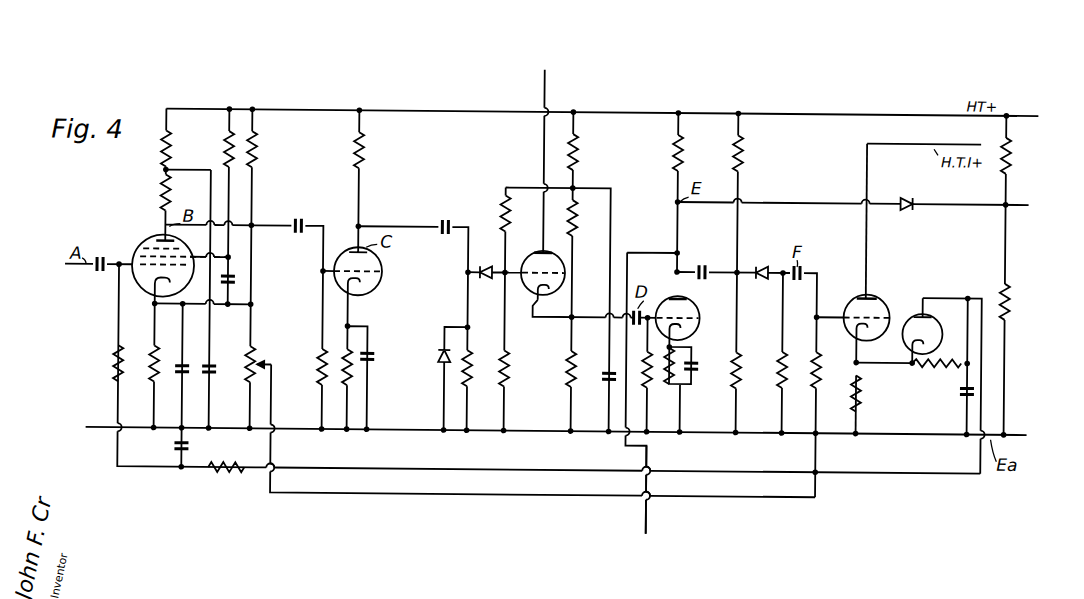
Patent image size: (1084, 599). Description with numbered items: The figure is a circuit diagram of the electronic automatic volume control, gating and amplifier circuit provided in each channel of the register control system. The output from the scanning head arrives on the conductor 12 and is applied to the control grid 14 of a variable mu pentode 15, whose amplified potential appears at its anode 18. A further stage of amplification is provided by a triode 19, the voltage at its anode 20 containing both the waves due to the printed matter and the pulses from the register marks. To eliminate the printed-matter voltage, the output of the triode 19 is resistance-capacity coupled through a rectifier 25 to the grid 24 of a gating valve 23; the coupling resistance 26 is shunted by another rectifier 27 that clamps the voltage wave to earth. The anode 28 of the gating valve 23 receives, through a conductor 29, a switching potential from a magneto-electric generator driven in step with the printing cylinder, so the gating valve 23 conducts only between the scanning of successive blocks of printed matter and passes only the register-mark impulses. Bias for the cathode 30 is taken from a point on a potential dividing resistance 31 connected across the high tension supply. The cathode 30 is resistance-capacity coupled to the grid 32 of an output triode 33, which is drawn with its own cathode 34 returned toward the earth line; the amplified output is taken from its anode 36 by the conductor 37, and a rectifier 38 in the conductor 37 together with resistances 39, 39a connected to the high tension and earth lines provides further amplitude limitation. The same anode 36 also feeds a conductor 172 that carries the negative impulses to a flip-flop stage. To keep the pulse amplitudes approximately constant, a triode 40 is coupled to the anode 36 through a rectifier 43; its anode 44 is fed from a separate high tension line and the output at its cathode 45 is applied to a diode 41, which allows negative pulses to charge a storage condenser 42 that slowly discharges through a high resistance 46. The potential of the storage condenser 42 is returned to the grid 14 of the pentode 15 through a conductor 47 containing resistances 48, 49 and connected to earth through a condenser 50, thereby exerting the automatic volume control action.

The conductor 12 is at (82, 270).
The control grid 14 is at (150, 286).
The variable mu pentode 15 is at (145, 246).
The anode 18 is at (180, 252).
The triode 19 is at (336, 285).
The anode 20 is at (380, 261).
The gating valve 23 is at (560, 256).
The grid 24 is at (556, 275).
The rectifier 25 is at (488, 279).
The coupling resistance 26 is at (460, 380).
The rectifier 27 is at (437, 357).
The anode 28 is at (536, 252).
The conductor 29 is at (544, 98).
The cathode 30 is at (545, 297).
The potential dividing resistance 31 is at (577, 156).
The grid 32 is at (690, 318).
The output triode 33 is at (686, 294).
The cathode of valve 36 34 is at (685, 332).
The anode 36 is at (670, 293).
The conductor 37 is at (780, 201).
The rectifier 38 is at (906, 206).
The resistance 39 is at (1009, 154).
The resistance 39a is at (1006, 308).
The triode 40 is at (885, 298).
The diode 41 is at (938, 333).
The storage condenser 42 is at (960, 392).
The rectifier 43 is at (761, 266).
The anode 44 is at (860, 296).
The cathode 45 is at (862, 340).
The high resistance 46 is at (936, 365).
The conductor 47 is at (119, 329).
The resistance 48 is at (228, 474).
The resistance 49 is at (112, 374).
The condenser 50 is at (175, 450).
The conductor 172 is at (647, 519).